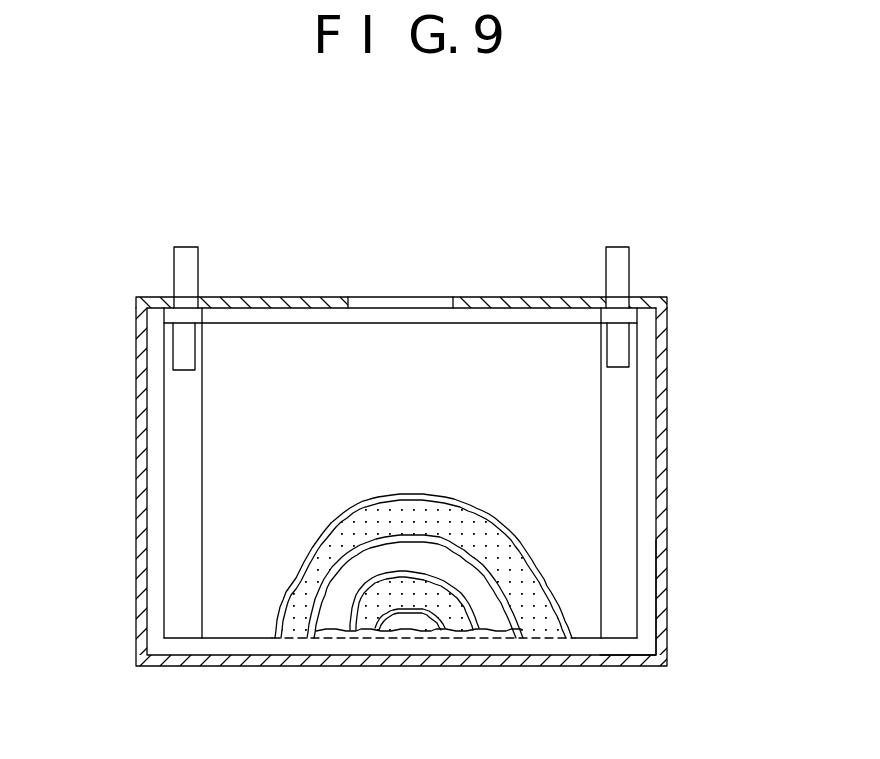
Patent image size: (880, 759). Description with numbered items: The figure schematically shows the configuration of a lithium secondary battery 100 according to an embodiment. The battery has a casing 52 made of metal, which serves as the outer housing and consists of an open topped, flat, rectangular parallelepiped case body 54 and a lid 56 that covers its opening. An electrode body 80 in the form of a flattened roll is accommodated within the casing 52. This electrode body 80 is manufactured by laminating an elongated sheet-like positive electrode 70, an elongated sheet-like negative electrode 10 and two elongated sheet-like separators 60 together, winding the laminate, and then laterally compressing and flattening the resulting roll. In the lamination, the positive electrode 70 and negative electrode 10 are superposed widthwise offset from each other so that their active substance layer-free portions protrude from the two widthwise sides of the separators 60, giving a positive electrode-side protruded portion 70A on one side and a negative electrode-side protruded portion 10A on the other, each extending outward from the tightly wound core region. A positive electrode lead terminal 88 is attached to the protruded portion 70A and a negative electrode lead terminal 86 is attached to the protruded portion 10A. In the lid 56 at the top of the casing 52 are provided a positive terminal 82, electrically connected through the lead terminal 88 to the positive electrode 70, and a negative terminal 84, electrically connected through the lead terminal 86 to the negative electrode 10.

The lithium secondary battery 100 is at (549, 151).
The negative electrode 10 is at (248, 622).
The negative electrode-side protruded portion 10A is at (185, 512).
The casing 52 is at (667, 441).
The case body 54 is at (660, 560).
The lid 56 is at (295, 302).
The separator sheet 60 is at (295, 620).
The positive electrode 70 is at (338, 623).
The positive electrode-side protruded portion 70A is at (625, 537).
The electrode body 80 is at (578, 640).
The positive terminal 82 is at (617, 262).
The negative terminal 84 is at (188, 262).
The negative electrode lead terminal 86 is at (183, 360).
The positive electrode lead terminal 88 is at (622, 362).